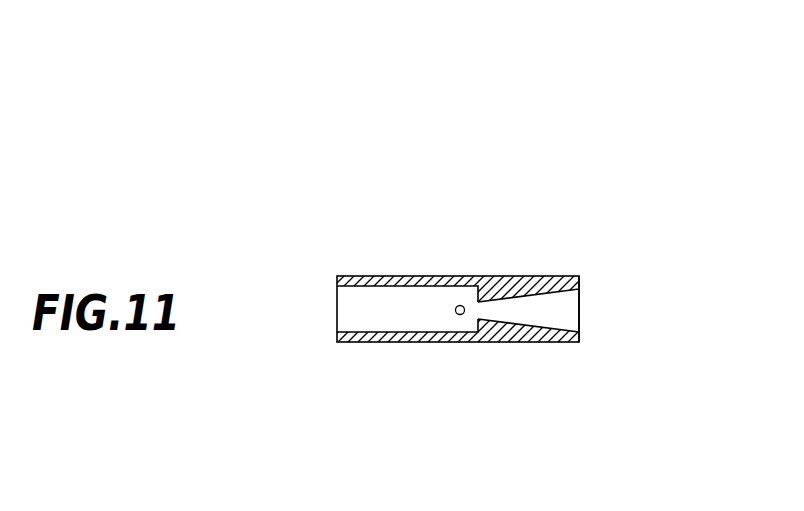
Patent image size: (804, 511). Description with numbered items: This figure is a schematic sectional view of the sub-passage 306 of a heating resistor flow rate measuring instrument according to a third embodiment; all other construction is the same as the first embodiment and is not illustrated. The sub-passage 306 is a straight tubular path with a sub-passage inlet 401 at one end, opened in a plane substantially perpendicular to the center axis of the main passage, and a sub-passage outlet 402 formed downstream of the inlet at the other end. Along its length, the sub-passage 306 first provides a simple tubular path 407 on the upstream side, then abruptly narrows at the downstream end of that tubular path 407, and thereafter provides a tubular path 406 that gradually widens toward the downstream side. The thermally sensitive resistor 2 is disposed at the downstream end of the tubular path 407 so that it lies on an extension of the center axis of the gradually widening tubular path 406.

The sub-passage 306 is at (375, 242).
The sub-passage inlet 401 is at (337, 308).
The sub-passage outlet 402 is at (580, 323).
The gradually widening tubular path 406 is at (562, 309).
The tubular path 407 is at (418, 308).
The thermally sensitive resistor 2 is at (457, 314).